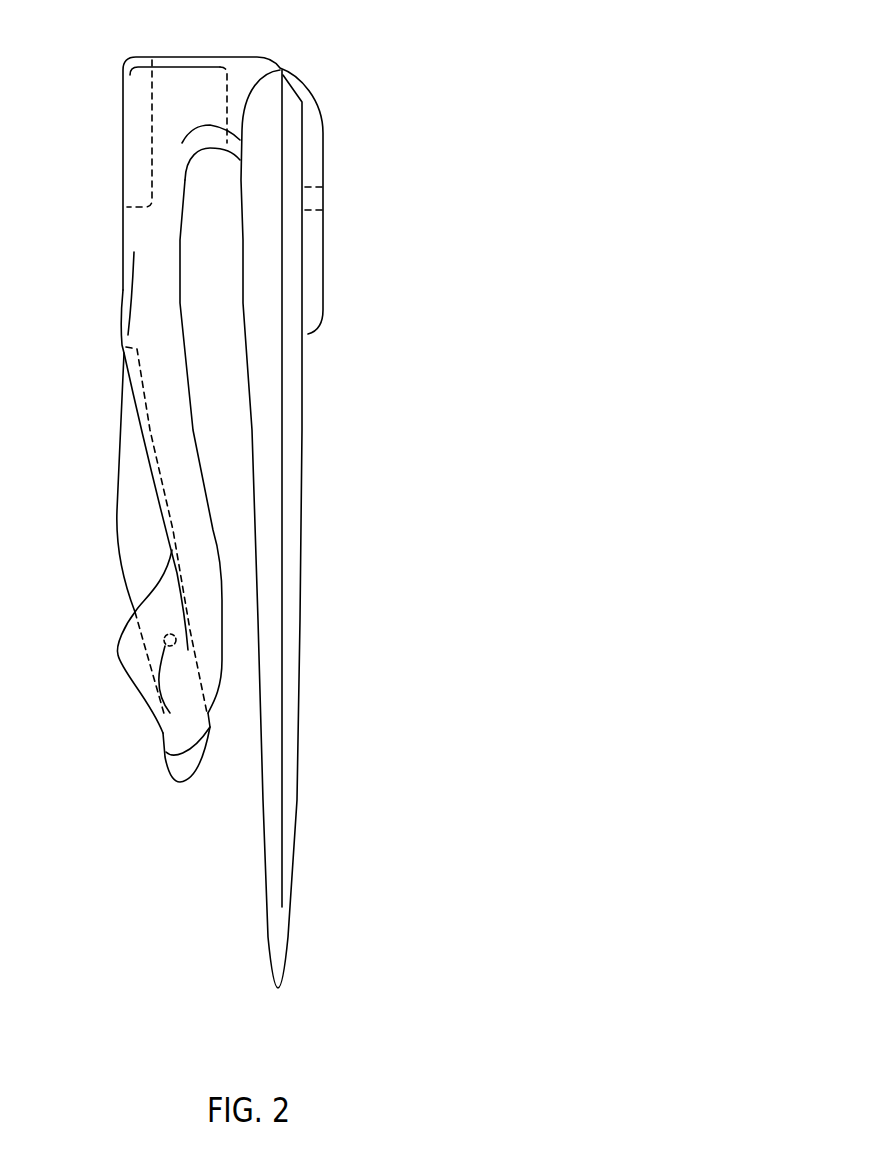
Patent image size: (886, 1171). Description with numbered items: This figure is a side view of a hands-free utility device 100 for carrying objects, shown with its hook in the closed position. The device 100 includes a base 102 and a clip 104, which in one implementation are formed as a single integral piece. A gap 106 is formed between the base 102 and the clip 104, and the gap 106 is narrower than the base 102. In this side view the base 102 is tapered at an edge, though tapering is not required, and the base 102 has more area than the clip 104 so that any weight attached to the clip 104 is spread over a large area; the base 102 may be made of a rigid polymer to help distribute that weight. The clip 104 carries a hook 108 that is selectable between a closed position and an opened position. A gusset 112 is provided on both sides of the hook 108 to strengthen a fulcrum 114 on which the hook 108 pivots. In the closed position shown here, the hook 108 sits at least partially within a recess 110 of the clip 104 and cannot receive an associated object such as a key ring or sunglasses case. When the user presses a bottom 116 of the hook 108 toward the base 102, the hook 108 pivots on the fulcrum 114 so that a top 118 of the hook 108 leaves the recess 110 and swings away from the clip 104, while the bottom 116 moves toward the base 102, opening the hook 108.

The utility device 100 is at (499, 103).
The base 102 is at (290, 480).
The clip 104 is at (127, 232).
The gap 106 is at (239, 755).
The hook 108 is at (123, 512).
The recess 110 is at (123, 353).
The gusset 112 is at (125, 652).
The fulcrum 114 is at (150, 702).
The bottom of the hook 116 is at (172, 773).
The top of the hook 118 is at (122, 400).